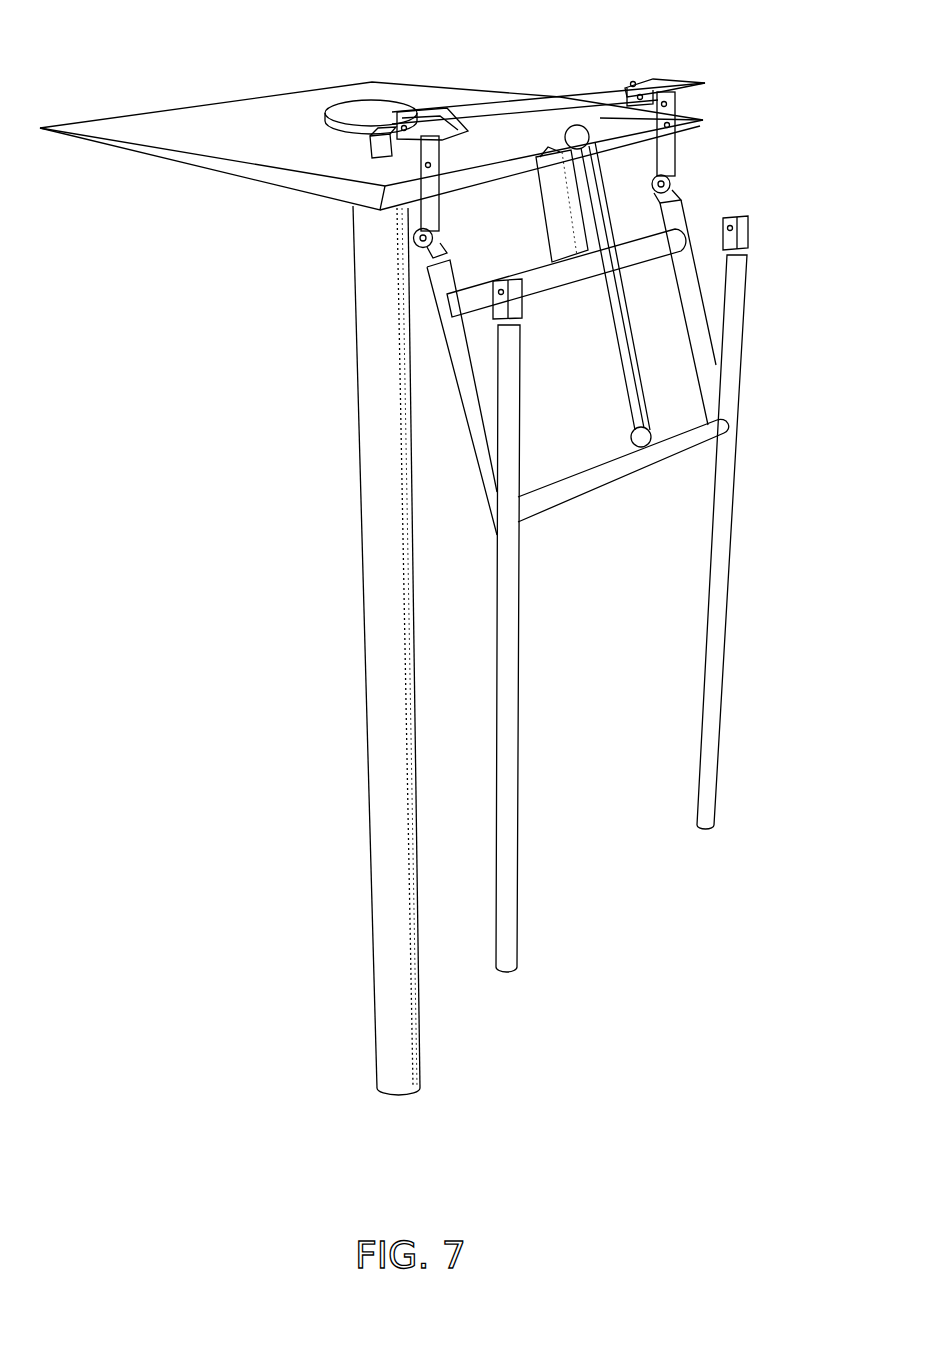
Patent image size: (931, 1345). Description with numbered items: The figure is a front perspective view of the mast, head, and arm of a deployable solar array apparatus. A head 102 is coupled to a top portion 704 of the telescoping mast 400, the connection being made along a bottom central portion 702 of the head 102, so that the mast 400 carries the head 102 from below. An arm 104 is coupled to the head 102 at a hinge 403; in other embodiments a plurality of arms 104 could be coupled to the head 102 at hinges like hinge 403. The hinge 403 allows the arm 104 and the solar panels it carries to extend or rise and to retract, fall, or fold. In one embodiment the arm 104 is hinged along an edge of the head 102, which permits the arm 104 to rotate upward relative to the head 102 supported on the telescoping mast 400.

The head 102 is at (224, 117).
The bottom central portion 702 is at (313, 198).
The top portion 704 is at (344, 273).
The telescoping mast 400 is at (380, 800).
The hinge 403 is at (672, 185).
The arm 104 is at (505, 933).